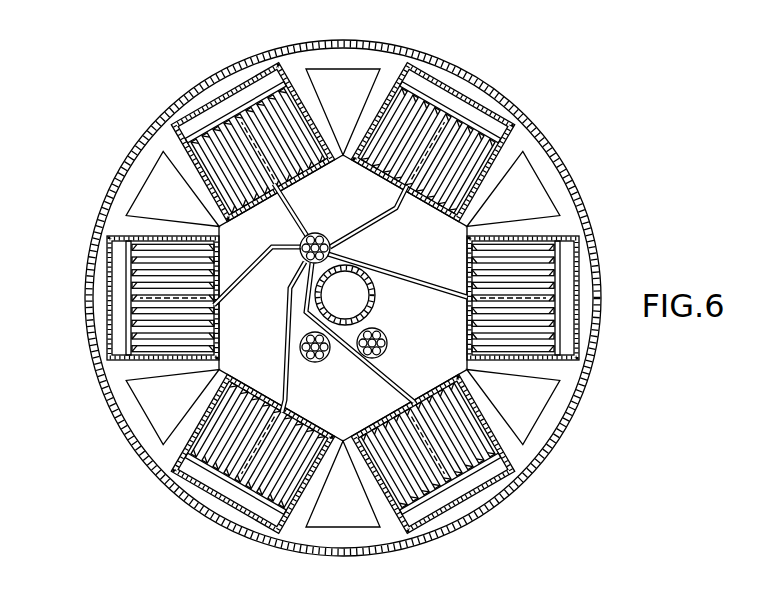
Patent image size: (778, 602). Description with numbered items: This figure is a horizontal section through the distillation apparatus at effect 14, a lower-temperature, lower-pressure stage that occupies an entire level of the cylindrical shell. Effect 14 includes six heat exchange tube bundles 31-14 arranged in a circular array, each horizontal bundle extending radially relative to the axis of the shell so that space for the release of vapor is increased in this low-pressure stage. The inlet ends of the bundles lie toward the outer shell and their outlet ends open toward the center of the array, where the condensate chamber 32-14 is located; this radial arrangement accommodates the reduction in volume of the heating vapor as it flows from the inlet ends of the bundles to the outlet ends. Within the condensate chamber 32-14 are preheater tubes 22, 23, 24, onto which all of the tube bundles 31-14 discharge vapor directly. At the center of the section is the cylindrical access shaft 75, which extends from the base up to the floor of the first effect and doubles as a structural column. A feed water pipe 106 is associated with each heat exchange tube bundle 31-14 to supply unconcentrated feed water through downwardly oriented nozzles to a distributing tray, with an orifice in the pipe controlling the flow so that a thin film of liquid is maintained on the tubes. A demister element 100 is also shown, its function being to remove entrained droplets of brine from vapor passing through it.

The effect 14 is at (568, 144).
The heat exchange tube bundles 31-14 is at (287, 111).
The condensate chamber 32-14 is at (306, 172).
The demister element 100 is at (292, 216).
The feed water pipe 106 is at (384, 219).
The preheater tubes 22 is at (317, 233).
The preheater tubes 23 is at (316, 362).
The preheater tubes 24 is at (386, 337).
The cylindrical access shaft 75 is at (374, 303).